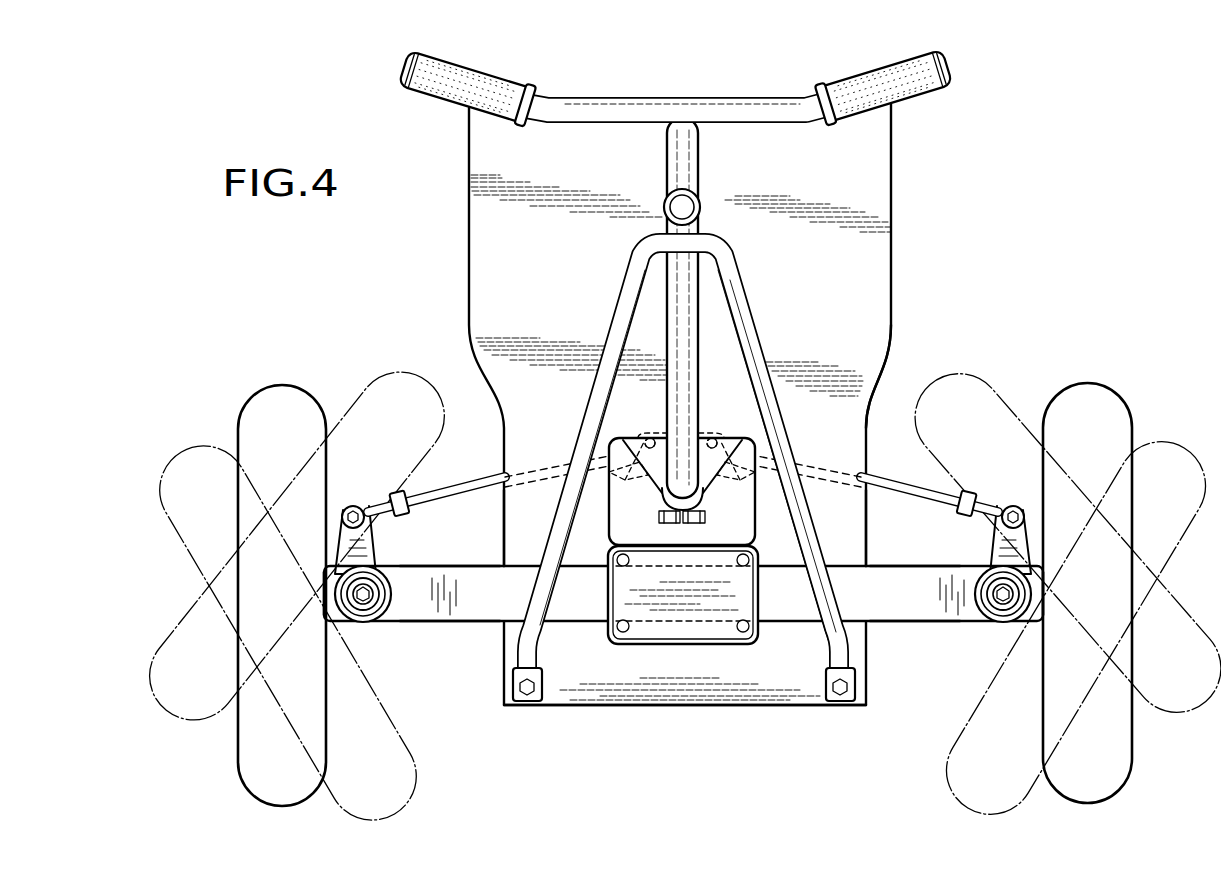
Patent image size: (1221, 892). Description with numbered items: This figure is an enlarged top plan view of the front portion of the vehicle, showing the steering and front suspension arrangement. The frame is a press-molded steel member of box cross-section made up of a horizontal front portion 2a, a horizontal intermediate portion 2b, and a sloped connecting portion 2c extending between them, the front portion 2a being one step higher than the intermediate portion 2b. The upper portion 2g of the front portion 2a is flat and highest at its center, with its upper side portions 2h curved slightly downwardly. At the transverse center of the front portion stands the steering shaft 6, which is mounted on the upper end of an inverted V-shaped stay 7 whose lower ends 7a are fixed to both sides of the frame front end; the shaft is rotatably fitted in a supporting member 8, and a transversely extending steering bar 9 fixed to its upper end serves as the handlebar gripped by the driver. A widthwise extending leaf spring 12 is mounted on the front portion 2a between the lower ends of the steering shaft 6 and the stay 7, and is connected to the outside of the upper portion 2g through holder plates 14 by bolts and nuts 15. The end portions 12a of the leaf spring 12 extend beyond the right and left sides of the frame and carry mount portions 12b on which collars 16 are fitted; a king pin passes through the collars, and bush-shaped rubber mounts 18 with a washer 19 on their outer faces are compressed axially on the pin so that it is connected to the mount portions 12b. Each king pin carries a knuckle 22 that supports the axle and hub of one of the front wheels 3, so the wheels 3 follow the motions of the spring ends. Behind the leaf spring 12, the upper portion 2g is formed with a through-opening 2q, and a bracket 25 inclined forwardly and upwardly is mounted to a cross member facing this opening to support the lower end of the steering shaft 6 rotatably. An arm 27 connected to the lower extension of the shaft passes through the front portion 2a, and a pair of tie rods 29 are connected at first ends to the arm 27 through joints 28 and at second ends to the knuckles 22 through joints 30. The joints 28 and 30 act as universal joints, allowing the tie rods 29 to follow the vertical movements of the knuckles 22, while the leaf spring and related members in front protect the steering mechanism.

The front portion 2a is at (703, 690).
The intermediate portion 2b is at (885, 198).
The sloped connecting portion 2c is at (870, 366).
The upper portion 2g is at (647, 655).
The upper side portions 2h is at (503, 550).
The through-opening 2q is at (757, 499).
The front wheels 3 is at (285, 400).
The steering shaft 6 is at (680, 160).
The inverted V-shaped stay 7 is at (742, 329).
The lower ends 7a is at (510, 690).
The supporting member 8 is at (700, 224).
The steering bar 9 is at (773, 122).
The leaf spring 12 is at (897, 612).
The end portions 12a is at (452, 612).
The mount portions 12b is at (380, 573).
The holder plates 14 is at (685, 640).
The bolts and nuts 15 is at (621, 633).
The collars 16 is at (392, 616).
The rubber mounts 18 is at (372, 616).
The washer 19 is at (375, 590).
The knuckle 22 is at (350, 535).
The bracket 25 is at (655, 485).
The arm 27 is at (710, 482).
The joints 28 is at (648, 456).
The tie rods 29 is at (481, 489).
The joints 30 is at (386, 497).